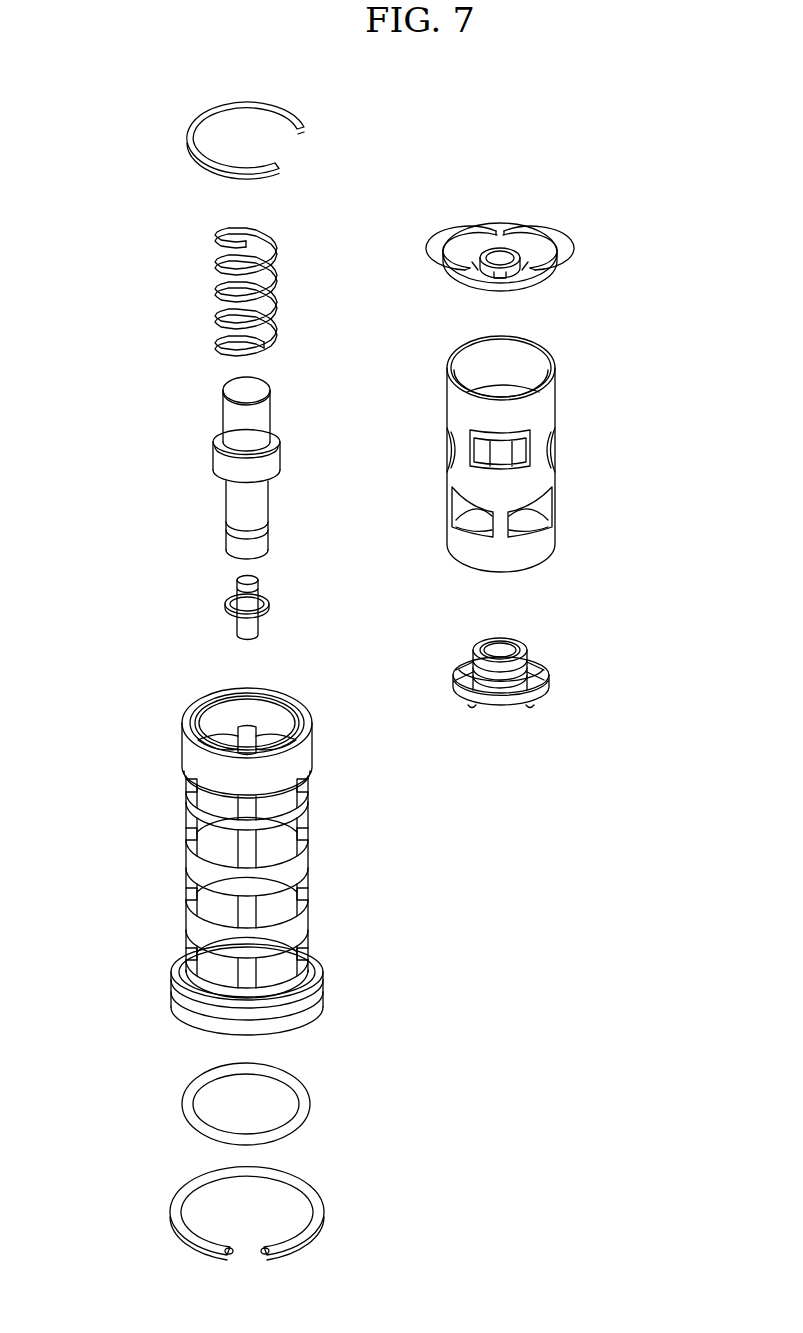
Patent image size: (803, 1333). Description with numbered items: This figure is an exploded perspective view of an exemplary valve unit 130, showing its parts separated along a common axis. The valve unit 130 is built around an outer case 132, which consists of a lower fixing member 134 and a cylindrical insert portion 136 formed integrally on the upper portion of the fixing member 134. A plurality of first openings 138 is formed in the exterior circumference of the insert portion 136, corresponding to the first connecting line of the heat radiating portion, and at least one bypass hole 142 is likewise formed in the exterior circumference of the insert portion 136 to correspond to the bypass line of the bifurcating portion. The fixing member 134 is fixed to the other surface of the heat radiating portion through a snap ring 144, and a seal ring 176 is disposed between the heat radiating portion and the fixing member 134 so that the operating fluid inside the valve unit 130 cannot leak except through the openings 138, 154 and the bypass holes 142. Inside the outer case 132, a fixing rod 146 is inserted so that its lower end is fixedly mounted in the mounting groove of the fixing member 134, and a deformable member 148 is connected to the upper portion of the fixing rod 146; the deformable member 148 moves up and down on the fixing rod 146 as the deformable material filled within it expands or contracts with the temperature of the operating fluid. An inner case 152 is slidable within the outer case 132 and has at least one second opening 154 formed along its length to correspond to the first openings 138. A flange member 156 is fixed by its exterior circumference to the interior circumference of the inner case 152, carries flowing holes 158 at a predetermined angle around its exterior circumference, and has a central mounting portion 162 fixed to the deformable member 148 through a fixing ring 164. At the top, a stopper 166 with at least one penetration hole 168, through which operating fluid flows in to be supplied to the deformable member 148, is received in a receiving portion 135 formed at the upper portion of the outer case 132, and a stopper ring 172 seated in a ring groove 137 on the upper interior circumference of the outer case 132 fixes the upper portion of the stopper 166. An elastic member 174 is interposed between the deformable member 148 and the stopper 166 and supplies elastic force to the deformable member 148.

The valve unit 130 is at (507, 120).
The outer case 132 is at (83, 920).
The fixing member 134 is at (174, 975).
The receiving portion 135 is at (232, 727).
The insert portion 136 is at (185, 921).
The ring groove 137 is at (218, 733).
The first opening 138 is at (309, 832).
The bypass hole 142 is at (180, 798).
The snap ring 144 is at (317, 1200).
The fixing rod 146 is at (246, 600).
The deformable member 148 is at (220, 409).
The inner case 152 is at (535, 410).
The second opening 154 is at (527, 474).
The flange member 156 is at (533, 630).
The flowing hole 158 is at (540, 676).
The mounting portion 162 is at (470, 683).
The fixing ring 164 is at (232, 613).
The stopper 166 is at (547, 240).
The penetration hole 168 is at (498, 250).
The stopper ring 172 is at (292, 118).
The elastic member 174 is at (278, 246).
The seal ring 176 is at (307, 1093).